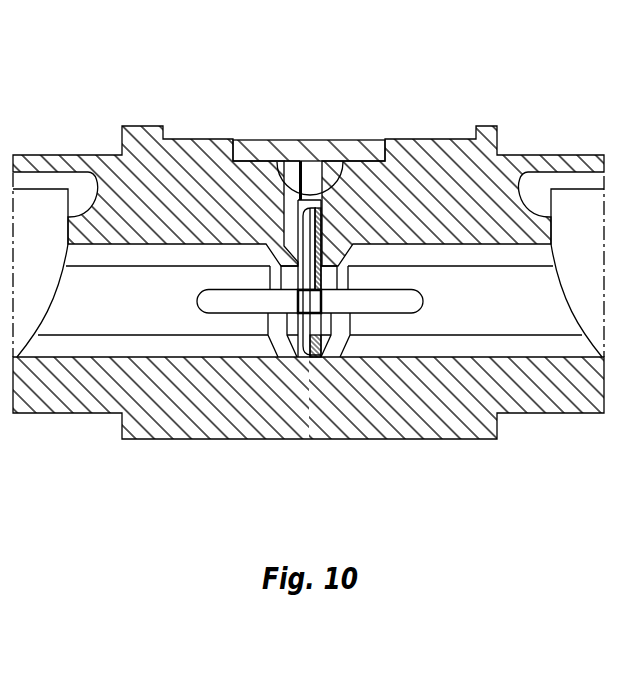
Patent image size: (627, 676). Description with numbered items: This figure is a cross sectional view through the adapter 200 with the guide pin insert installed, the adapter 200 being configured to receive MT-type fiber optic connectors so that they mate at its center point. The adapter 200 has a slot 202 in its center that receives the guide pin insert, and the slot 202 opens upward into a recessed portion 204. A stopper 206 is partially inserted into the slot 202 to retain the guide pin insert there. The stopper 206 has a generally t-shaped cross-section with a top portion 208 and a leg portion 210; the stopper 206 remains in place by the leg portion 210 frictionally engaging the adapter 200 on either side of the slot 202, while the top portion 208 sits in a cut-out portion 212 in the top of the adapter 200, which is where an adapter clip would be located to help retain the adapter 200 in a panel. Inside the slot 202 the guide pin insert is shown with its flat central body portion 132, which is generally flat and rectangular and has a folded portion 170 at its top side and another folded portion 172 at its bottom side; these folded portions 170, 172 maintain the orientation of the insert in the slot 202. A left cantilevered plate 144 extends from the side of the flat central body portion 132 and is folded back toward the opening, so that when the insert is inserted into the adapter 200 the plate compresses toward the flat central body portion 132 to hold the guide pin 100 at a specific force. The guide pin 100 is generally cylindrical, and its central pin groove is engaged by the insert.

The adapter 200 is at (586, 118).
The recessed portion 204 is at (232, 140).
The cut-out portion 212 is at (437, 138).
The stopper 206 is at (328, 138).
The top portion 208 is at (278, 185).
The leg portion 210 is at (299, 188).
The folded portion 170 is at (310, 199).
The slot 202 is at (338, 177).
The folded portion 172 is at (313, 345).
The left cantilevered plate 144 is at (303, 283).
The flat central body portion 132 is at (322, 259).
The guide pin 100 is at (423, 294).